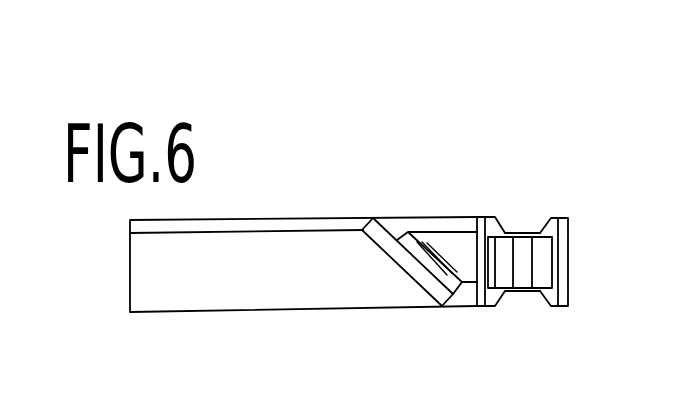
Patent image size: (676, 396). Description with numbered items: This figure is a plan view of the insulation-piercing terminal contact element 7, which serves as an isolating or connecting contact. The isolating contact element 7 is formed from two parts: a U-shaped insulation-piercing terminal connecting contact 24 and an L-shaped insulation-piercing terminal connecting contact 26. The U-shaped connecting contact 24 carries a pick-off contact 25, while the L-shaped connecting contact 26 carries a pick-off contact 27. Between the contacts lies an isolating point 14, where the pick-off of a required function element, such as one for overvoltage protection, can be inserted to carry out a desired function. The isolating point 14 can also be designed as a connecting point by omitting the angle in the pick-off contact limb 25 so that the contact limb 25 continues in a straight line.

The L-shaped insulation-piercing terminal connecting contact 26 is at (270, 240).
The U-shaped insulation-piercing terminal connecting contact 24 is at (391, 243).
The isolating contact element 7 is at (501, 213).
The pick-off contact 25 is at (504, 285).
The isolating point 14 is at (532, 243).
The pick-off contact 27 is at (542, 284).